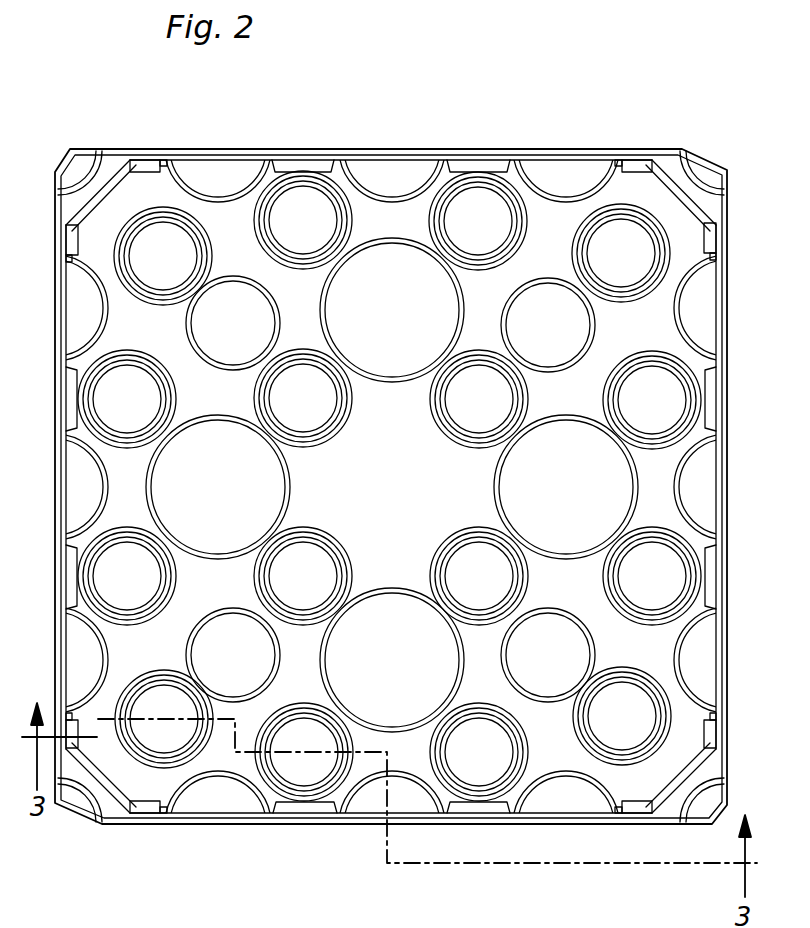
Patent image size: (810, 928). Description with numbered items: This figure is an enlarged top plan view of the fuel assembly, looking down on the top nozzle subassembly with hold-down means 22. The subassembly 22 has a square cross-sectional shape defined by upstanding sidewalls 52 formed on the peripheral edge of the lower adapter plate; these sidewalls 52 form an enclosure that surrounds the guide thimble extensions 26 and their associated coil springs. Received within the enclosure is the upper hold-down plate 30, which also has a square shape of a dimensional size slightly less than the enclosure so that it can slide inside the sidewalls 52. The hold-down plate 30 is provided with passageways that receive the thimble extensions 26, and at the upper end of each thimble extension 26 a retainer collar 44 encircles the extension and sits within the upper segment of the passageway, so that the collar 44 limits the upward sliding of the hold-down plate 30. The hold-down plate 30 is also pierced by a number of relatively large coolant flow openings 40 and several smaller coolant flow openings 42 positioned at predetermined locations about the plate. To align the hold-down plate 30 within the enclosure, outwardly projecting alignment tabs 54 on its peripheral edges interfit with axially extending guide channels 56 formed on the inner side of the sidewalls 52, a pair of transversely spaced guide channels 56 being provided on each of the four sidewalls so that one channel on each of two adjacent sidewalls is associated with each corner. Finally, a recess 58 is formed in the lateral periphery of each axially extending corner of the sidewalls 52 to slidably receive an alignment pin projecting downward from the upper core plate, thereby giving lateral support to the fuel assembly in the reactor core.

The top nozzle subassembly with hold-down means 22 is at (367, 138).
The guide thimble extension 26 is at (272, 380).
The upper hold-down plate 30 is at (392, 479).
The large coolant flow opening 40 is at (348, 257).
The smaller coolant flow opening 42 is at (275, 300).
The collar 44 is at (280, 400).
The upstanding sidewalls 52 is at (476, 151).
The alignment tab 54 is at (148, 160).
The guide channel 56 is at (168, 165).
The recess 58 is at (103, 166).